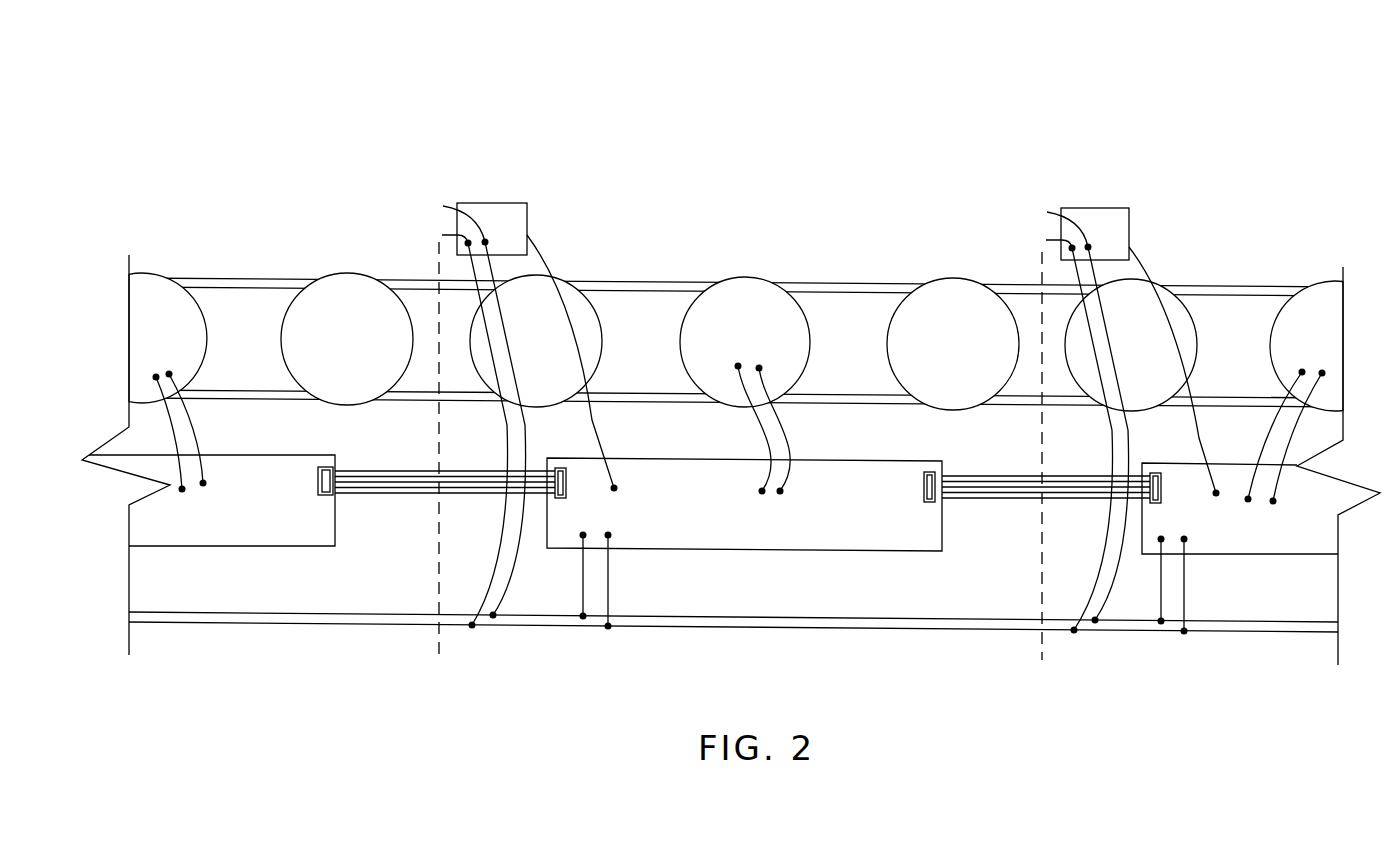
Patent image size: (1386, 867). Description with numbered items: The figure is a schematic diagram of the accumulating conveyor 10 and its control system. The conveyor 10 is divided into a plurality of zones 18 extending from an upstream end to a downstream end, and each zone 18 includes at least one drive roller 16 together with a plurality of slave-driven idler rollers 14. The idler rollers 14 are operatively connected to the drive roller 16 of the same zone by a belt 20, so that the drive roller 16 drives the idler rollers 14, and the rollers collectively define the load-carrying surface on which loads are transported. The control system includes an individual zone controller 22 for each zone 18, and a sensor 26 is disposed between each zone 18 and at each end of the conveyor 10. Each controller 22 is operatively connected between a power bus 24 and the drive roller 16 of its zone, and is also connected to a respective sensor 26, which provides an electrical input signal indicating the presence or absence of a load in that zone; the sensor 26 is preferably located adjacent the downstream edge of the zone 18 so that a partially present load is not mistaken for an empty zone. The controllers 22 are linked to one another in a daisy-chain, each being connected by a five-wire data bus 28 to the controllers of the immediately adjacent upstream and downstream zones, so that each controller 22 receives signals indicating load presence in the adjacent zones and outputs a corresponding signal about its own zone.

The accumulating conveyor 10 is at (562, 92).
The idler roller 14 is at (330, 357).
The drive roller 16 is at (139, 338).
The zone 18 is at (211, 204).
The belt 20 is at (248, 278).
The zone controller 22 is at (252, 519).
The power bus 24 is at (533, 658).
The sensor 26 is at (488, 220).
The 5-wire data bus 28 is at (371, 517).